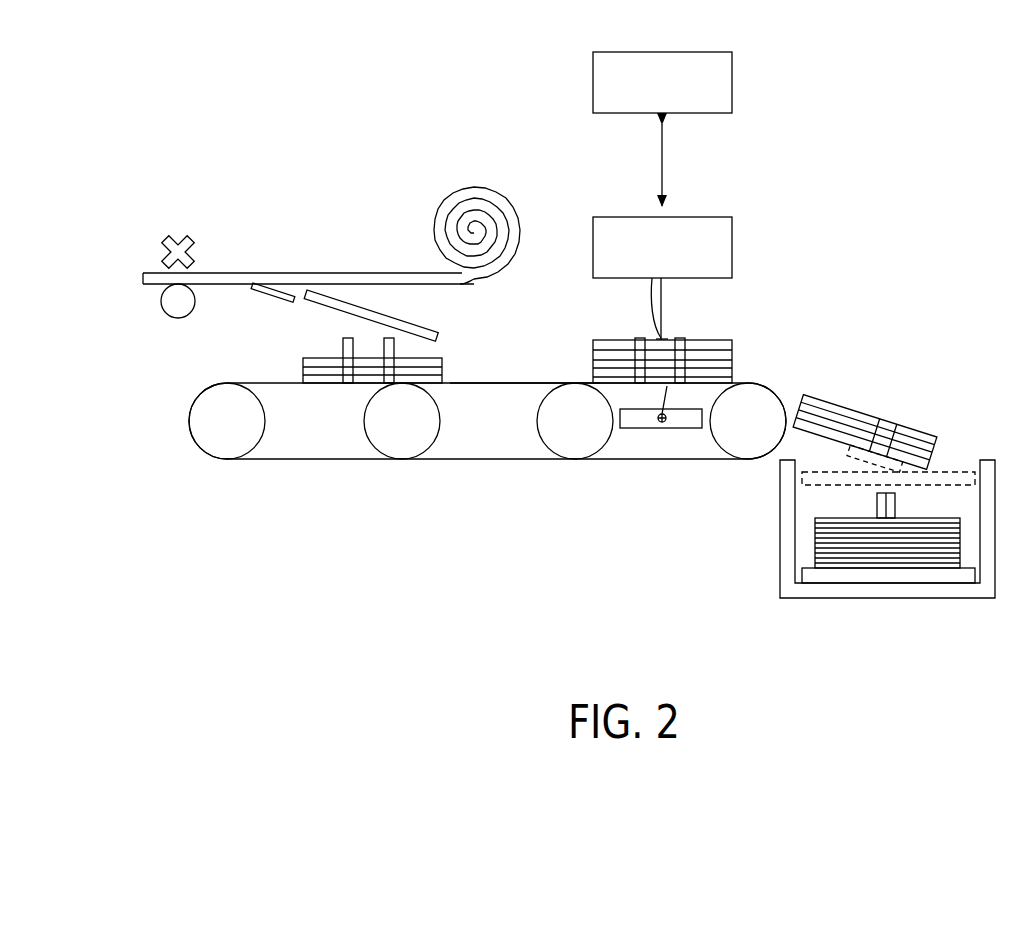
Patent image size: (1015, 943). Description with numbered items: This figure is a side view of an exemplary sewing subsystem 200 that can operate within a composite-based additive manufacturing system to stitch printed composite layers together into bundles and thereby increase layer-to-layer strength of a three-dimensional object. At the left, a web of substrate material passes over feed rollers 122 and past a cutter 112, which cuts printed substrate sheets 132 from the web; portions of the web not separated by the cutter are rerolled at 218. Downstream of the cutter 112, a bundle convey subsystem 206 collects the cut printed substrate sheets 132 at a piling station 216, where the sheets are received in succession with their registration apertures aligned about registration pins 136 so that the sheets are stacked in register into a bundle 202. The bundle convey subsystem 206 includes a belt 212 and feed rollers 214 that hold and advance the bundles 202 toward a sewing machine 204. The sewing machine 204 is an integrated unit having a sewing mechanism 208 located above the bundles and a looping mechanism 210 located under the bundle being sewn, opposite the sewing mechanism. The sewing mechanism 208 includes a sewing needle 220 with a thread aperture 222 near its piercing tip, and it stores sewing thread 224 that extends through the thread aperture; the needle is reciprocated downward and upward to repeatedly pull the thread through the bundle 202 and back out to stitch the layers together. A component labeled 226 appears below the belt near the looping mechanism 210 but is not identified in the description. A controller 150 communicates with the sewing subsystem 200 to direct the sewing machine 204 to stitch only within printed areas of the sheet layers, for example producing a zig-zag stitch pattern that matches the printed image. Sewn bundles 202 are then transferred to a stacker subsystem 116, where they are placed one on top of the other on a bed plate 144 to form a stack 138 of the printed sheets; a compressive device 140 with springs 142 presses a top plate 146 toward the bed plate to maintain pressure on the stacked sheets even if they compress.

The sewing subsystem 200 is at (888, 118).
The controller 150 is at (733, 72).
The sewing mechanism 208 is at (692, 217).
The sewing machine 204 is at (704, 240).
The sewing needle 220 is at (664, 320).
The sewing thread 224 is at (655, 335).
The thread aperture 222 is at (668, 340).
The reroll of web substrate 218 is at (472, 181).
The cutter 112 is at (172, 238).
The feed rollers 122 is at (177, 318).
The printed substrate sheets 132 is at (345, 298).
The bundle 202 is at (445, 360).
The piling station 216 is at (300, 365).
The bundle convey subsystem 206 is at (459, 435).
The feed rollers 214 is at (213, 430).
The belt 212 is at (530, 383).
The looping mechanism 210 is at (643, 430).
The sensor connection 226 is at (668, 386).
The stacker subsystem 116 is at (860, 529).
The top plate 146 is at (940, 470).
The bed plate 144 is at (800, 576).
The stack 138 is at (800, 538).
The registration pins 136 is at (872, 510).
The compressive device 140 is at (970, 462).
The springs 142 is at (880, 442).